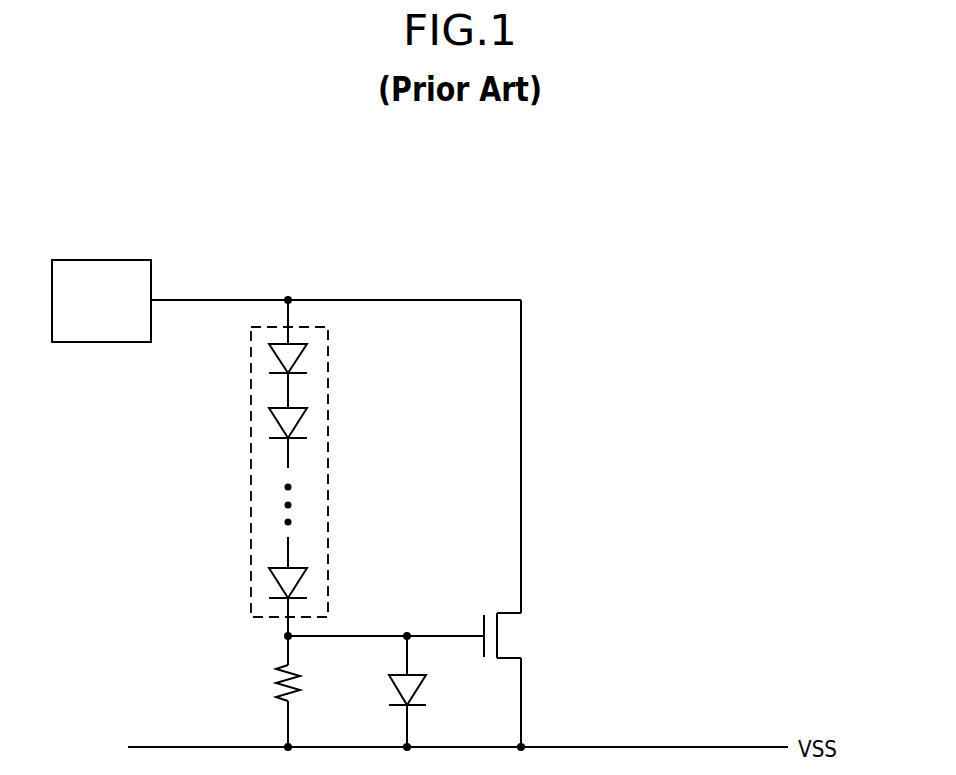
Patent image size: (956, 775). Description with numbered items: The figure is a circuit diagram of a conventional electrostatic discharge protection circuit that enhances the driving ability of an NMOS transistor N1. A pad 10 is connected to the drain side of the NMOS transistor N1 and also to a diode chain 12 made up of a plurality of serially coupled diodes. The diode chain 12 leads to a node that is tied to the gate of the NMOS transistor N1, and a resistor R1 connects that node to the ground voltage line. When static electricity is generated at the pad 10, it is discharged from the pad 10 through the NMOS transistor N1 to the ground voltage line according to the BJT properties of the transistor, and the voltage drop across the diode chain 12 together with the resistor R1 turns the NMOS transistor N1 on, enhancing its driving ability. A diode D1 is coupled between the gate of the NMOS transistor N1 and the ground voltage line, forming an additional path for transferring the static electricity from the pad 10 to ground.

The pad 10 is at (101, 260).
The diode chain 12 is at (329, 417).
The resistor R1 is at (301, 683).
The diode D1 is at (421, 691).
The NMOS transistor N1 is at (511, 635).